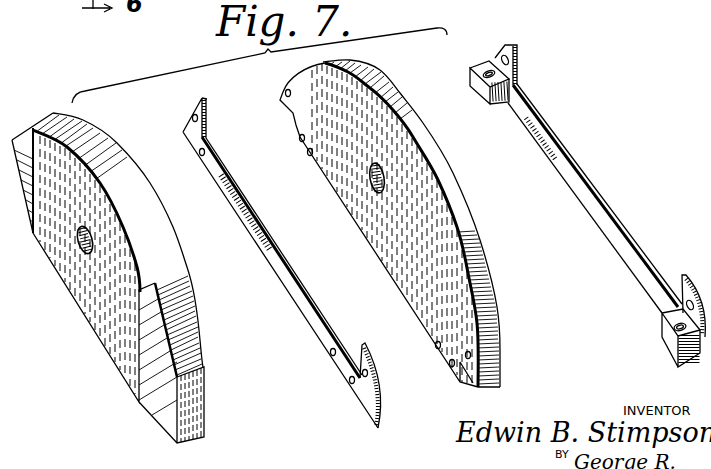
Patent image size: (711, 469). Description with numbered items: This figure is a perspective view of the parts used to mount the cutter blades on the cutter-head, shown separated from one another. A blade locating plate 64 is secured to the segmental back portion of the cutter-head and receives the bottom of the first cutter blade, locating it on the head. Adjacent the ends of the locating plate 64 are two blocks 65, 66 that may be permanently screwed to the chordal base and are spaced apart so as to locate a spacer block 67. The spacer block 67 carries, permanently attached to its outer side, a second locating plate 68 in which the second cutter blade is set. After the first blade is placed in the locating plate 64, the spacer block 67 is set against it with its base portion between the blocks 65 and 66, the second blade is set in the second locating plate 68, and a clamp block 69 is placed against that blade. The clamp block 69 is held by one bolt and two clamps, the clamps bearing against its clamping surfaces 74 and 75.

The blade locating plate 64 is at (571, 210).
The block 65 is at (472, 68).
The block 66 is at (677, 350).
The spacer block 67 is at (468, 216).
The second locating plate 68 is at (293, 277).
The clamp block 69 is at (110, 271).
The clamping surface 74 is at (23, 143).
The clamping surface 75 is at (165, 410).